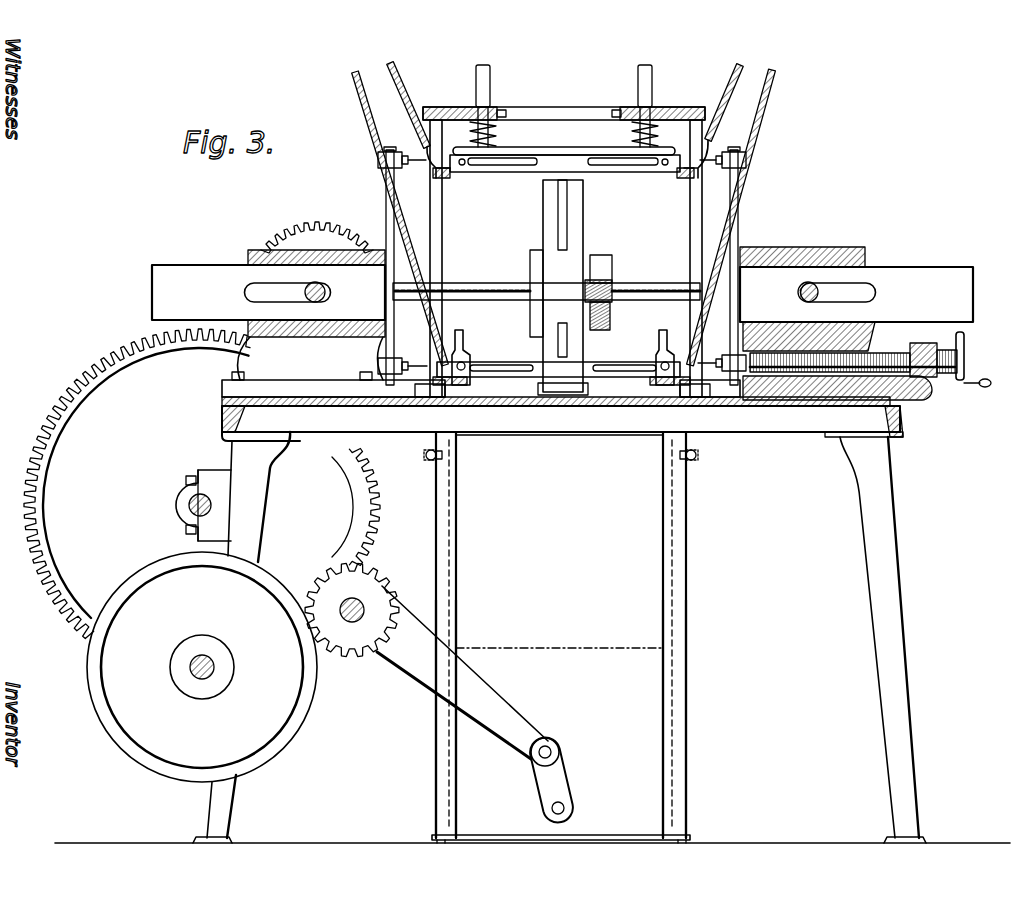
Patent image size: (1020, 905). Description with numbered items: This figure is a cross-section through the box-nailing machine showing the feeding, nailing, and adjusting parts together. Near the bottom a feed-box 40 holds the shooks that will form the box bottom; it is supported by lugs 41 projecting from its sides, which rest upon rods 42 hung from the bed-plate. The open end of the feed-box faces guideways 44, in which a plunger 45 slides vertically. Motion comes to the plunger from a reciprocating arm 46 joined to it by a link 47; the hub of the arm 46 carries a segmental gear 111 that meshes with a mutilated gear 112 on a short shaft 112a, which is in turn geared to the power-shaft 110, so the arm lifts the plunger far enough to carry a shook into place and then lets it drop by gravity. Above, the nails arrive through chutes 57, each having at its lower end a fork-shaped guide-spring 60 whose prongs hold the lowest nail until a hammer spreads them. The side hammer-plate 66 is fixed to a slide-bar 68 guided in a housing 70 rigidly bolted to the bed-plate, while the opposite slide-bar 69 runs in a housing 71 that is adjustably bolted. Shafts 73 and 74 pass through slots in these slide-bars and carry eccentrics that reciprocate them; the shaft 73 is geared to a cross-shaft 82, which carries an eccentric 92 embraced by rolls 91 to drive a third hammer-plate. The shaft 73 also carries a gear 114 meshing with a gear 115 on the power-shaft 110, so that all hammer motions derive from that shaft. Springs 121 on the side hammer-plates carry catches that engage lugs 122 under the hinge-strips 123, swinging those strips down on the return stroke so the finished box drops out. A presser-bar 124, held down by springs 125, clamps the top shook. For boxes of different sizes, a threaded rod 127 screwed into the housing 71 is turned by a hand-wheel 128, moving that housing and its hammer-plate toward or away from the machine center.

The feed-box 40 is at (561, 635).
The lugs 41 is at (427, 457).
The rods 42 is at (433, 466).
The guideways 44 is at (688, 650).
The plunger 45 is at (561, 745).
The reciprocating arm 46 is at (404, 672).
The link 47 is at (543, 790).
The chutes 57 is at (410, 104).
The guide-spring 60 is at (431, 153).
The hammer-plate 66 is at (524, 166).
The slide-bar 68 is at (155, 298).
The slide-bar 69 is at (975, 298).
The housing 70 is at (250, 257).
The housing 71 is at (800, 404).
The shaft 73 is at (320, 288).
The shaft 74 is at (824, 288).
The cross-shaft 82 is at (513, 274).
The rolls 91 is at (609, 289).
The eccentric 92 is at (606, 266).
The power-shaft 110 is at (188, 507).
The segmental gear 111 is at (372, 582).
The mutilated gear 112 is at (262, 742).
The short shaft 112a is at (216, 662).
The gear 114 is at (288, 236).
The gear 115 is at (78, 414).
The springs 121 is at (414, 390).
The lugs 122 is at (460, 388).
The hinge-strips 123 is at (650, 383).
The presser-bar 124 is at (553, 152).
The springs 125 is at (480, 132).
The rod 127 is at (920, 396).
The hand-wheel 128 is at (964, 342).